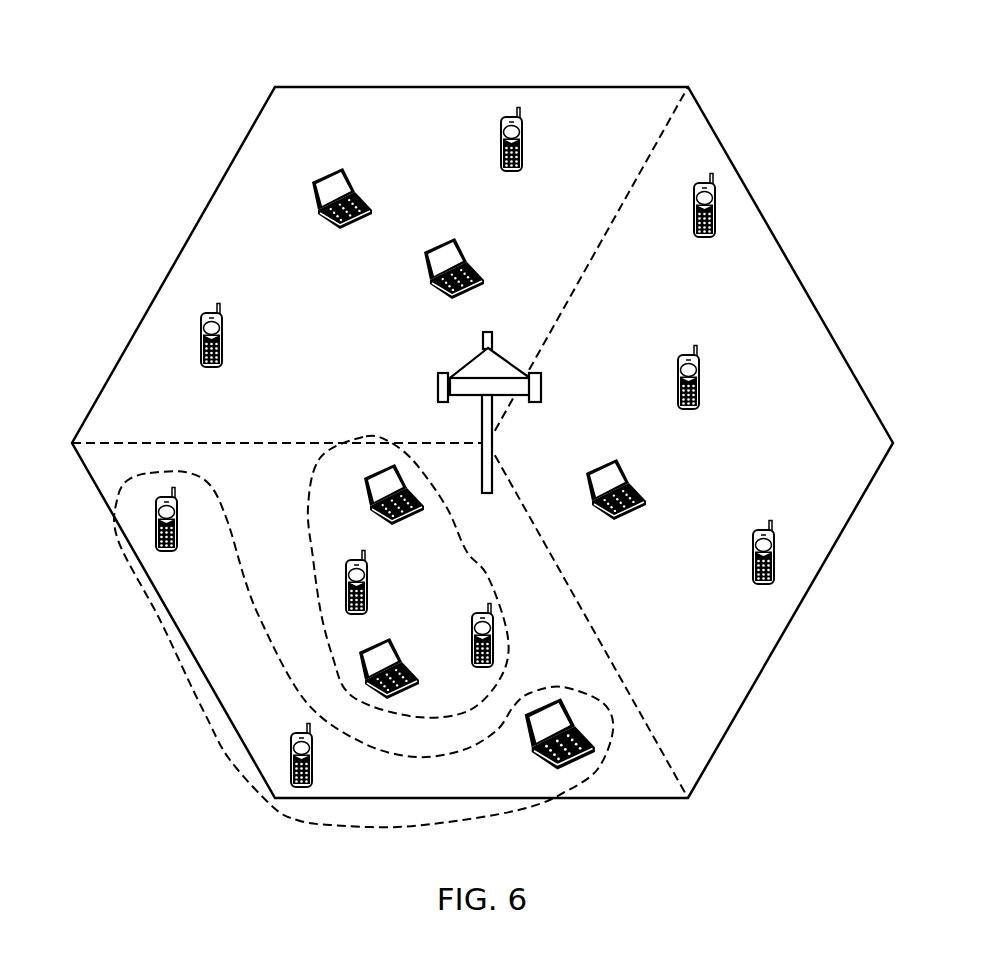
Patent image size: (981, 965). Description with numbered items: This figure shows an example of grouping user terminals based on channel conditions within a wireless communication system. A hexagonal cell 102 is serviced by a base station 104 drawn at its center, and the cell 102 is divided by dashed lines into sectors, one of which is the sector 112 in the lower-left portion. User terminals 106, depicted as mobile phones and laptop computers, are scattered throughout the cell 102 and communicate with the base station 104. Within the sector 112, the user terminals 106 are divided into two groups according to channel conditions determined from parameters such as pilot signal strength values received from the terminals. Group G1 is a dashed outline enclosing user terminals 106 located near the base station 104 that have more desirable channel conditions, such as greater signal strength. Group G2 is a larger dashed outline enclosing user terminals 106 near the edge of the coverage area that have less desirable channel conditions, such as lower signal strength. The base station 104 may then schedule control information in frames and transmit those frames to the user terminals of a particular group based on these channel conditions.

The cell 102 is at (482, 411).
The base station 104 is at (438, 382).
The user terminals 106 is at (352, 173).
The sector 112 is at (95, 463).
The group G1 is at (465, 572).
The group G2 is at (227, 550).